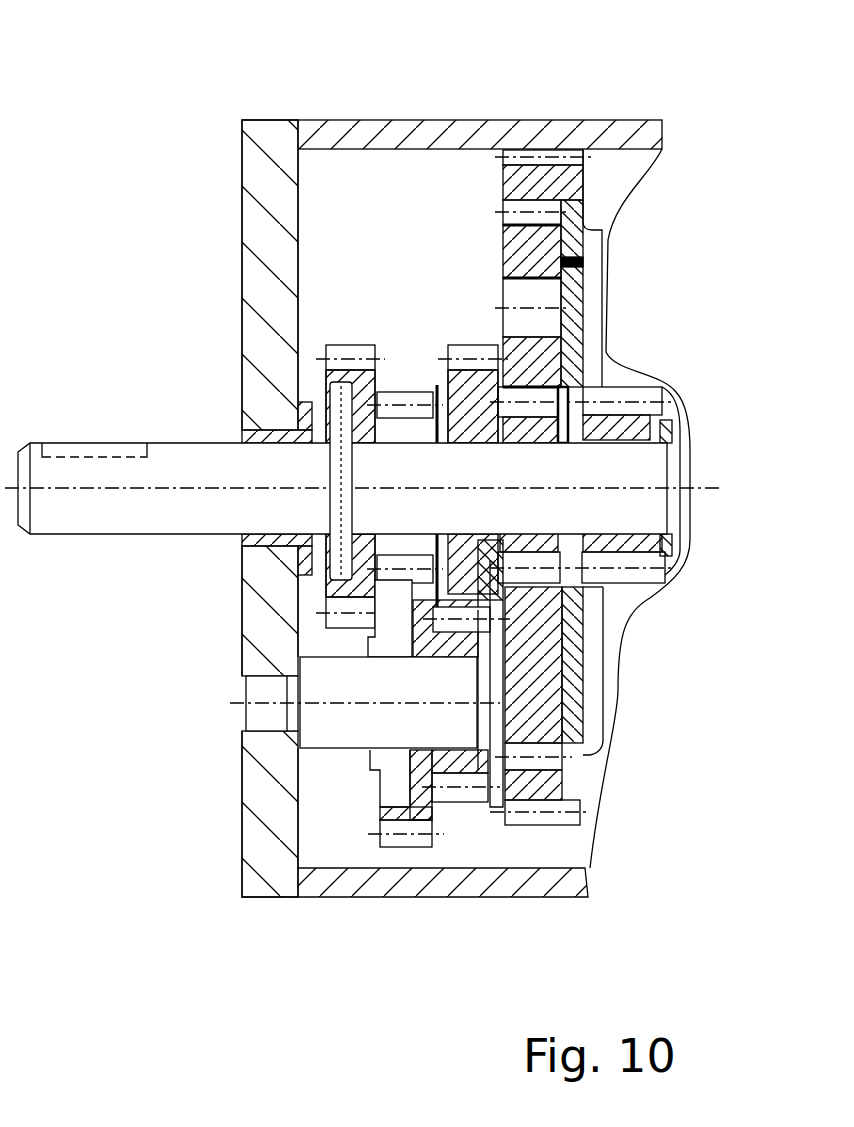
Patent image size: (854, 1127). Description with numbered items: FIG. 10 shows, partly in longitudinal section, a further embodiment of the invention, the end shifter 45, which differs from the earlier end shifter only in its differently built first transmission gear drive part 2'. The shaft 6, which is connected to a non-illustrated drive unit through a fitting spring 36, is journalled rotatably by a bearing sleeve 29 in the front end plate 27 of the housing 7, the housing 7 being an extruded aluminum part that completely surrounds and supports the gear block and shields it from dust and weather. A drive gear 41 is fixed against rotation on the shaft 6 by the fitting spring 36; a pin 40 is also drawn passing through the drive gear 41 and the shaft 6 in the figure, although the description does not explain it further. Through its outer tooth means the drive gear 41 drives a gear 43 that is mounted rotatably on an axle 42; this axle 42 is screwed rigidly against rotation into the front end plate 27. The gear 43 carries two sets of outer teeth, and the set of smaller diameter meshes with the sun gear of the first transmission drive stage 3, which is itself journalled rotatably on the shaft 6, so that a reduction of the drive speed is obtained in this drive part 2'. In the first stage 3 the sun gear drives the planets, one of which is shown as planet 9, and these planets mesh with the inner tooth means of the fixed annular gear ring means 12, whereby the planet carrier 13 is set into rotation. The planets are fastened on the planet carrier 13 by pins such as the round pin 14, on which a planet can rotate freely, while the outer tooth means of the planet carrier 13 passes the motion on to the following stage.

The first transmission gear drive part 2' is at (443, 946).
The first transmission drive stage 3 is at (558, 487).
The shaft 6 is at (362, 500).
The housing 7 is at (414, 118).
The planet 9 is at (538, 262).
The annular gear ring means 12 is at (622, 119).
The planet carrier 13 is at (562, 337).
The round pin 14 is at (540, 310).
The front end plate 27 is at (272, 790).
The bearing sleeve 29 is at (242, 546).
The fitting spring 36 is at (63, 443).
The pin 40 is at (497, 435).
The drive gear 41 is at (376, 385).
The axle 42 is at (318, 690).
The gear 43 is at (470, 752).
The end shifter 45 is at (136, 662).